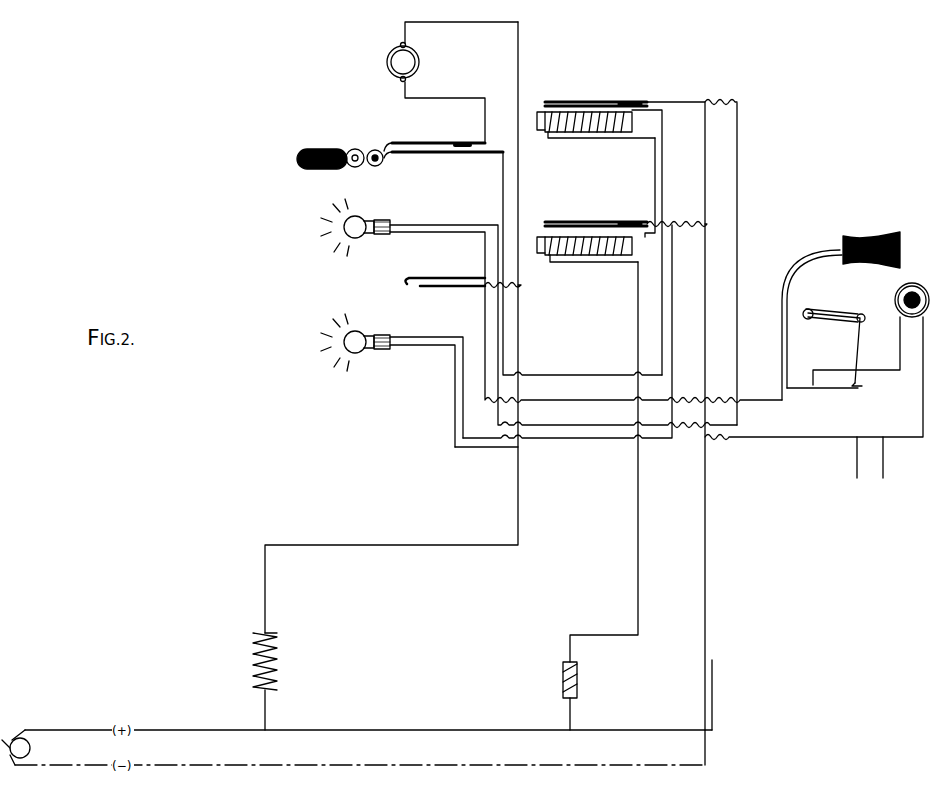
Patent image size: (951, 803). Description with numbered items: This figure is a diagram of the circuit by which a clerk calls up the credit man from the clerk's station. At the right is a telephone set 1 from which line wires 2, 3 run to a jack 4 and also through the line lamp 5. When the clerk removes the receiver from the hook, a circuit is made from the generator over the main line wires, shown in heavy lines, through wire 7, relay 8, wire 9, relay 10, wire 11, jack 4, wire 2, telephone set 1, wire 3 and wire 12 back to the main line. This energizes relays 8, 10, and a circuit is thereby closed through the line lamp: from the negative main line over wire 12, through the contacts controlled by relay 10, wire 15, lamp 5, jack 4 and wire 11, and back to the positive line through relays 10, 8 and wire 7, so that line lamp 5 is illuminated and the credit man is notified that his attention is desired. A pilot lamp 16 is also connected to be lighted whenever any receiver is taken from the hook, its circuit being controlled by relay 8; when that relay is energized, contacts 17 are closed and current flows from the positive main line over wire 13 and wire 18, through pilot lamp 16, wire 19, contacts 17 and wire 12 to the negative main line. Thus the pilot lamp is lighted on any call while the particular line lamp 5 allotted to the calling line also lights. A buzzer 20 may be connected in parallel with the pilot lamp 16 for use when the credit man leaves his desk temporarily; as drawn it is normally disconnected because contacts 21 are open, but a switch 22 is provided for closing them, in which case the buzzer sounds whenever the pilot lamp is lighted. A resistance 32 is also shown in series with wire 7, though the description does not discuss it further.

The telephone set 1 is at (865, 297).
The line wire 2 is at (758, 400).
The line wire 3 is at (790, 437).
The jack 4 is at (466, 272).
The line lamp 5 is at (380, 220).
The wire 7 is at (638, 583).
The relay 8 is at (632, 250).
The wire 9 is at (655, 160).
The relay 10 is at (632, 126).
The wire 11 is at (569, 92).
The wire 12 is at (705, 540).
The wire 13 is at (402, 537).
The wire 15 is at (737, 216).
The pilot lamp 16 is at (392, 336).
The contacts 17 is at (569, 212).
The wire 18 is at (455, 447).
The wire 19 is at (568, 438).
The buzzer 20 is at (420, 62).
The contacts 21 is at (416, 136).
The switch 22 is at (360, 147).
The resistance 32 is at (588, 680).